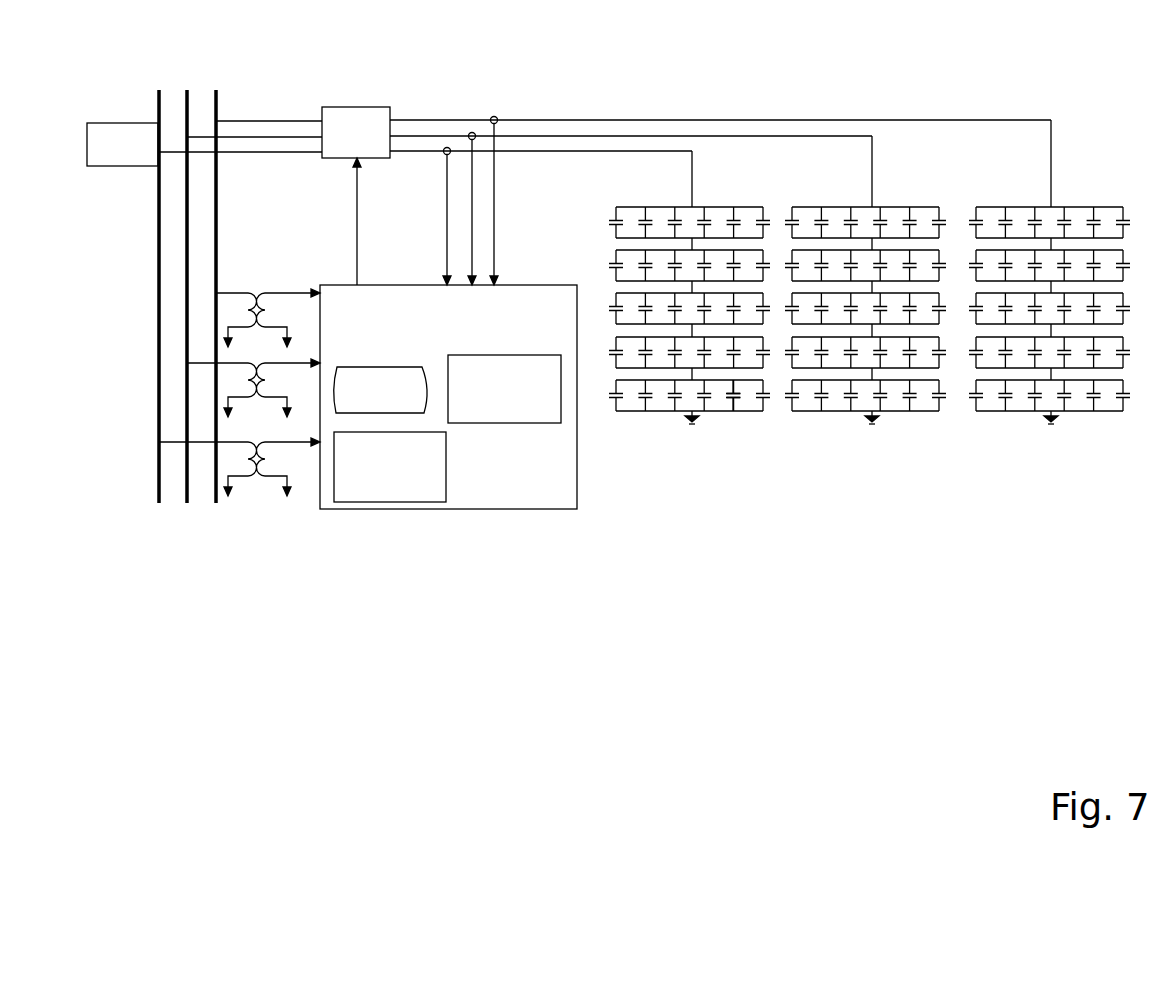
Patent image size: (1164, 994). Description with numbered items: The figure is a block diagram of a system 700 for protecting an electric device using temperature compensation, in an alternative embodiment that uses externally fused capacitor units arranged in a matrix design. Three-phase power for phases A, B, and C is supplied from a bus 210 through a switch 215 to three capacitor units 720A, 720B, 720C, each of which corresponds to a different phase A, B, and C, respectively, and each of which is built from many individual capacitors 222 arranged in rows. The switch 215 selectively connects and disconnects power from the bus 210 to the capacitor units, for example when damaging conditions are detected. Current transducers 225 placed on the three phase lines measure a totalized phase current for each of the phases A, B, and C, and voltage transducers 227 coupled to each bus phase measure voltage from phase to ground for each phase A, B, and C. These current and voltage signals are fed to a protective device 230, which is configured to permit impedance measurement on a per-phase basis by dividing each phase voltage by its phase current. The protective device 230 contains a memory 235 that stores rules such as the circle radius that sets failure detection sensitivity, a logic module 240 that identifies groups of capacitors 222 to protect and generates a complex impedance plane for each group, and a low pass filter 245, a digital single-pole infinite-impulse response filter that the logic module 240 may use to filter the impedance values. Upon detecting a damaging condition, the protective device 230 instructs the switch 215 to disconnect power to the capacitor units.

The system 700 is at (1096, 70).
The bus 210 is at (204, 284).
The switch 215 is at (686, 196).
The current transducers 225 is at (491, 118).
The voltage transducers 227 is at (270, 275).
The protective device 230 is at (448, 397).
The memory 235 is at (380, 390).
The logic module 240 is at (504, 389).
The low pass filter 245 is at (390, 467).
The capacitor unit 720A is at (712, 184).
The capacitor unit 720B is at (906, 184).
The capacitor unit 720C is at (1092, 184).
The capacitor 222 is at (733, 397).